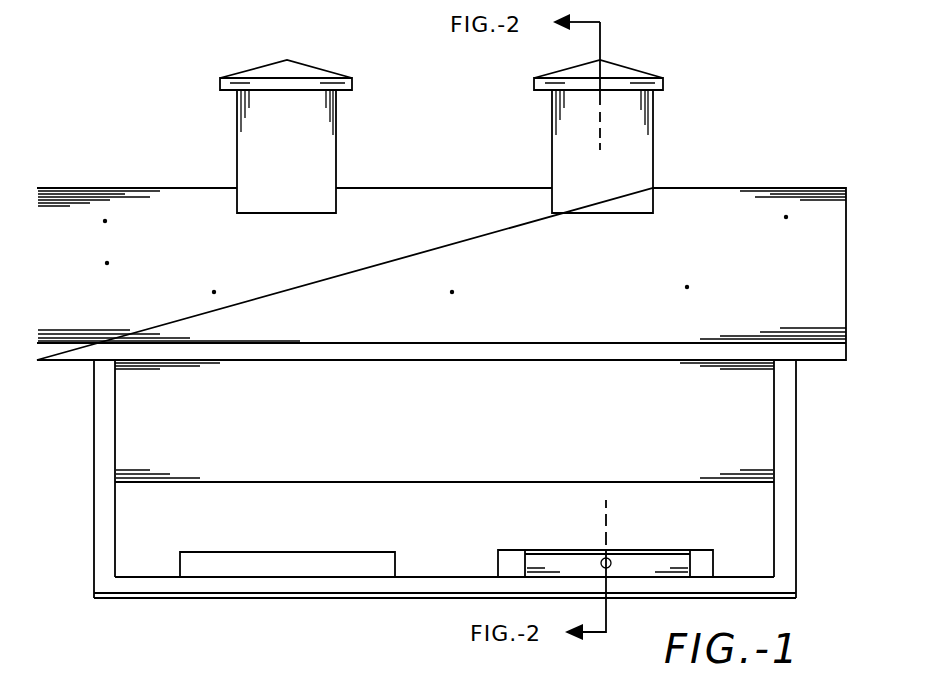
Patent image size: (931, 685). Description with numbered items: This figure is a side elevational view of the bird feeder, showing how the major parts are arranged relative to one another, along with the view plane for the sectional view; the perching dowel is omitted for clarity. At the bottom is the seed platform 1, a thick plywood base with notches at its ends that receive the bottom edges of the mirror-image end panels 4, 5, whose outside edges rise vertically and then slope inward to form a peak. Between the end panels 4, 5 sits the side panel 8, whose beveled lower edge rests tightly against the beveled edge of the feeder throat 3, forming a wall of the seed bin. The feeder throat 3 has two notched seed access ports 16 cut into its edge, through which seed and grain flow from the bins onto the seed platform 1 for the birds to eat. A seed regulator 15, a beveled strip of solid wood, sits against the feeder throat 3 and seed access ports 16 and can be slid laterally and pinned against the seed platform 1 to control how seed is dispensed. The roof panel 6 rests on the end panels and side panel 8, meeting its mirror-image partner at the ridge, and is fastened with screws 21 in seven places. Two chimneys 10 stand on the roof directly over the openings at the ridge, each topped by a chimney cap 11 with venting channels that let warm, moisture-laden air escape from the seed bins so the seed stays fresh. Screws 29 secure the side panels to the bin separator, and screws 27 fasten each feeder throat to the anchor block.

The seed platform 1 is at (140, 602).
The feeder throat 3 is at (330, 517).
The end panel 4 is at (93, 420).
The end panel 5 is at (798, 420).
The roof panel 6 is at (291, 259).
The side panel 8 is at (332, 418).
The chimney 10 is at (237, 140).
The chimney cap 11 is at (214, 87).
The seed regulator 15 is at (623, 566).
The seed access port 16 is at (246, 561).
The screw 21 is at (786, 262).
The screw 27 is at (475, 557).
The screw 29 is at (449, 372).